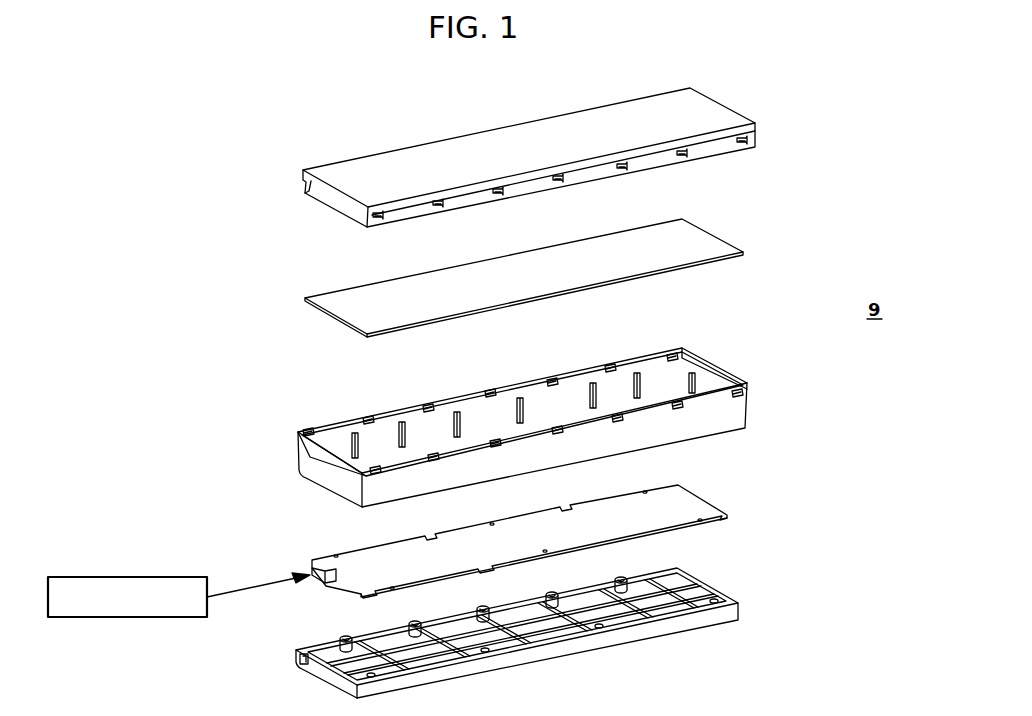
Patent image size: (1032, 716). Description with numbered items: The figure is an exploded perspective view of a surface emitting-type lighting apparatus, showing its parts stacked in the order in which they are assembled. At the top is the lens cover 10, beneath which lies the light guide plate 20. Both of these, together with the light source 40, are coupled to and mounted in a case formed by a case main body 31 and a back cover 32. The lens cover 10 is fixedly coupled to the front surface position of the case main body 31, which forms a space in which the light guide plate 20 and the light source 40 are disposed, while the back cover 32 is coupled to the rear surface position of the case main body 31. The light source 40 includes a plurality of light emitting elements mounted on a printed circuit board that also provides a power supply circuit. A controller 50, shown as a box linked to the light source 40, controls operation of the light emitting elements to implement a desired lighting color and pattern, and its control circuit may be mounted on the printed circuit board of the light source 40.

The lens cover 10 is at (728, 107).
The light guide plate 20 is at (716, 234).
The case main body 31 is at (748, 405).
The back cover 32 is at (712, 590).
The light source 40 is at (707, 500).
The controller 50 is at (118, 577).